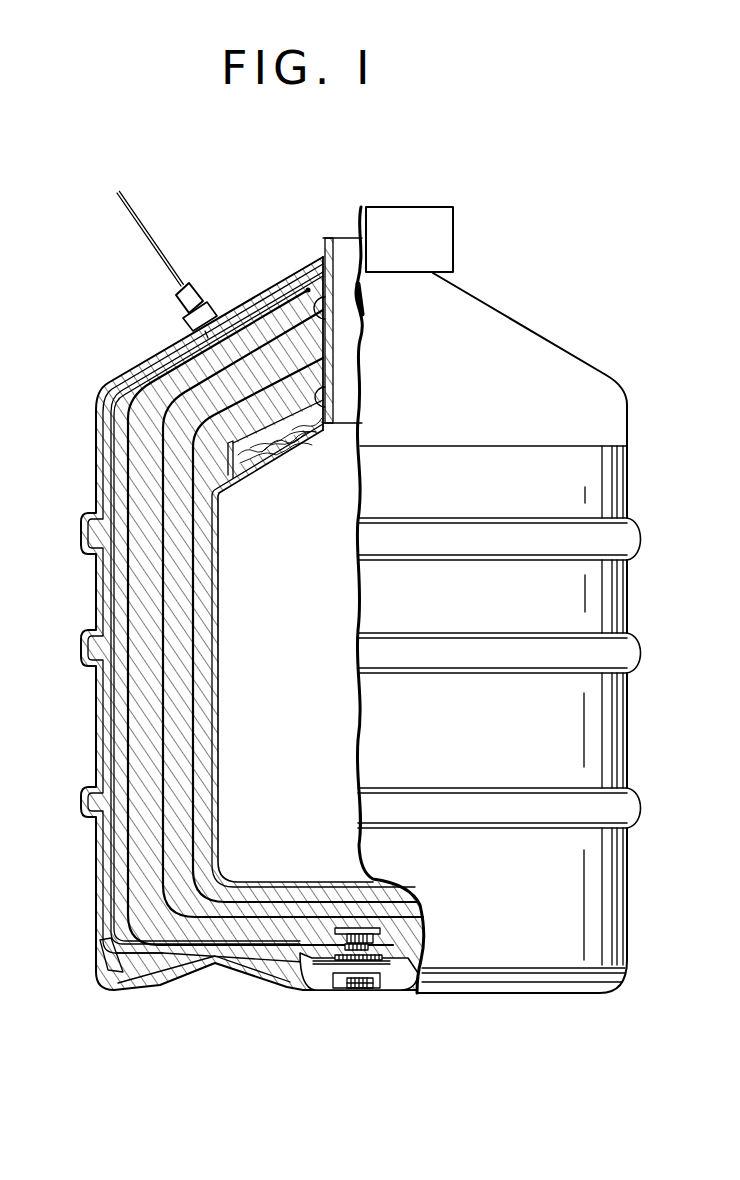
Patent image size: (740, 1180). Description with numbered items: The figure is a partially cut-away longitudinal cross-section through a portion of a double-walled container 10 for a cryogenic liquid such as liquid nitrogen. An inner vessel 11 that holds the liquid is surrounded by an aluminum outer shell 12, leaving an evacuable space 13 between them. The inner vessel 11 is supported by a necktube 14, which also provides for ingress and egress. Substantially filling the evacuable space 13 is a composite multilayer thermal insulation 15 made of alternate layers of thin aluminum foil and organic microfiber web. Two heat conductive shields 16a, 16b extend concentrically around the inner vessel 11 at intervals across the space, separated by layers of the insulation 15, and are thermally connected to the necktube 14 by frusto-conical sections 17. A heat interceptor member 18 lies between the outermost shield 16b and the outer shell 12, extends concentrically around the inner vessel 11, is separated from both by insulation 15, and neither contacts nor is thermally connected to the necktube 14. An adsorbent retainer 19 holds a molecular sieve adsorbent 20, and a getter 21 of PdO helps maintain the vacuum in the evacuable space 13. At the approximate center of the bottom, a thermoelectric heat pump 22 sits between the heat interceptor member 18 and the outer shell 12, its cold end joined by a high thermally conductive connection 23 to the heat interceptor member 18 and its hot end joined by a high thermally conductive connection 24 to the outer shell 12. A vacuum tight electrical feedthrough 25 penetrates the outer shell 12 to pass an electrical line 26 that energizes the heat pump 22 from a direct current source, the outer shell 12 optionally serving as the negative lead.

The double-walled container 10 is at (556, 327).
The inner vessel 11 is at (219, 820).
The outer shell 12 is at (95, 918).
The evacuable space 13 is at (103, 770).
The necktube 14 is at (317, 256).
The composite multilayer thermal insulation 15 is at (123, 605).
The heat conductive shield 16a is at (192, 753).
The heat conductive shield 16b is at (158, 723).
The frusto-conical sections 17 is at (333, 294).
The heat interceptor member 18 is at (130, 497).
The adsorbent retainer 19 is at (313, 424).
The molecular sieve 5A adsorbent 20 is at (277, 443).
The getter 21 is at (106, 972).
The thermoelectric heat pump 22 is at (318, 952).
The high thermally conductive connection 23 is at (390, 928).
The high thermally conductive connection 24 is at (395, 952).
The vacuum tight electrical feedthrough 25 is at (213, 304).
The electrical line 26 is at (162, 955).